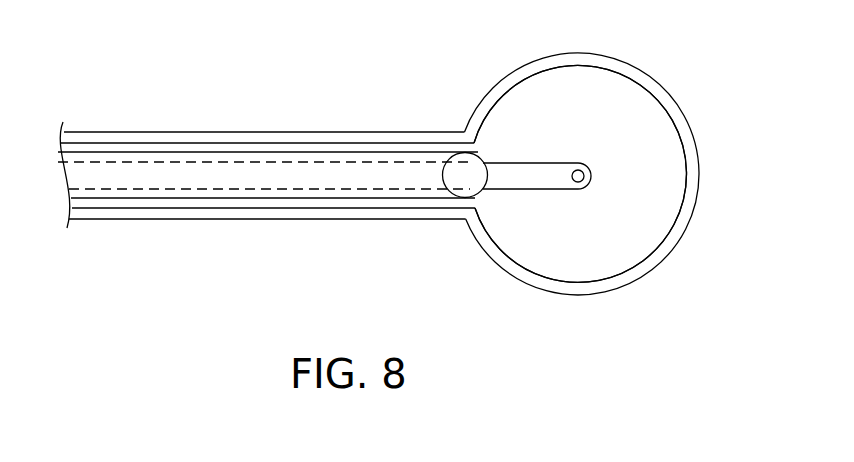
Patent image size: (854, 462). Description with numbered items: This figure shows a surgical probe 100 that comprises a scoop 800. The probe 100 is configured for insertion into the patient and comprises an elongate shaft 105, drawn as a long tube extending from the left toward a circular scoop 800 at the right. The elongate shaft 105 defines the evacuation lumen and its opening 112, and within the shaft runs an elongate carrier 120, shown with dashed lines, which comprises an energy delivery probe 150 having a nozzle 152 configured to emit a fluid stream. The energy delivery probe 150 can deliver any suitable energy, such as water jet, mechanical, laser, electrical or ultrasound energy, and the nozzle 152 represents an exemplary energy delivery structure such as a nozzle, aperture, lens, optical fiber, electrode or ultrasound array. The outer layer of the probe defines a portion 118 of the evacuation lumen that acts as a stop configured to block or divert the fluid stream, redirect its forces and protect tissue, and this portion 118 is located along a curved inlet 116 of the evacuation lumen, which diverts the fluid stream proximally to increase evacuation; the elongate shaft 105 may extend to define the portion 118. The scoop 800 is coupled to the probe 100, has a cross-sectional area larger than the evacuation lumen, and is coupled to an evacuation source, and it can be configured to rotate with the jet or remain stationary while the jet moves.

The surgical probe 100 is at (245, 62).
The elongate shaft 105 is at (199, 130).
The opening 112 is at (657, 88).
The curved inlet 116 is at (660, 137).
The portion of the evacuation lumen 118 is at (652, 162).
The elongate carrier 120 is at (227, 198).
The energy delivery probe 150 is at (482, 158).
The nozzle 152 is at (578, 185).
The scoop 800 is at (663, 177).